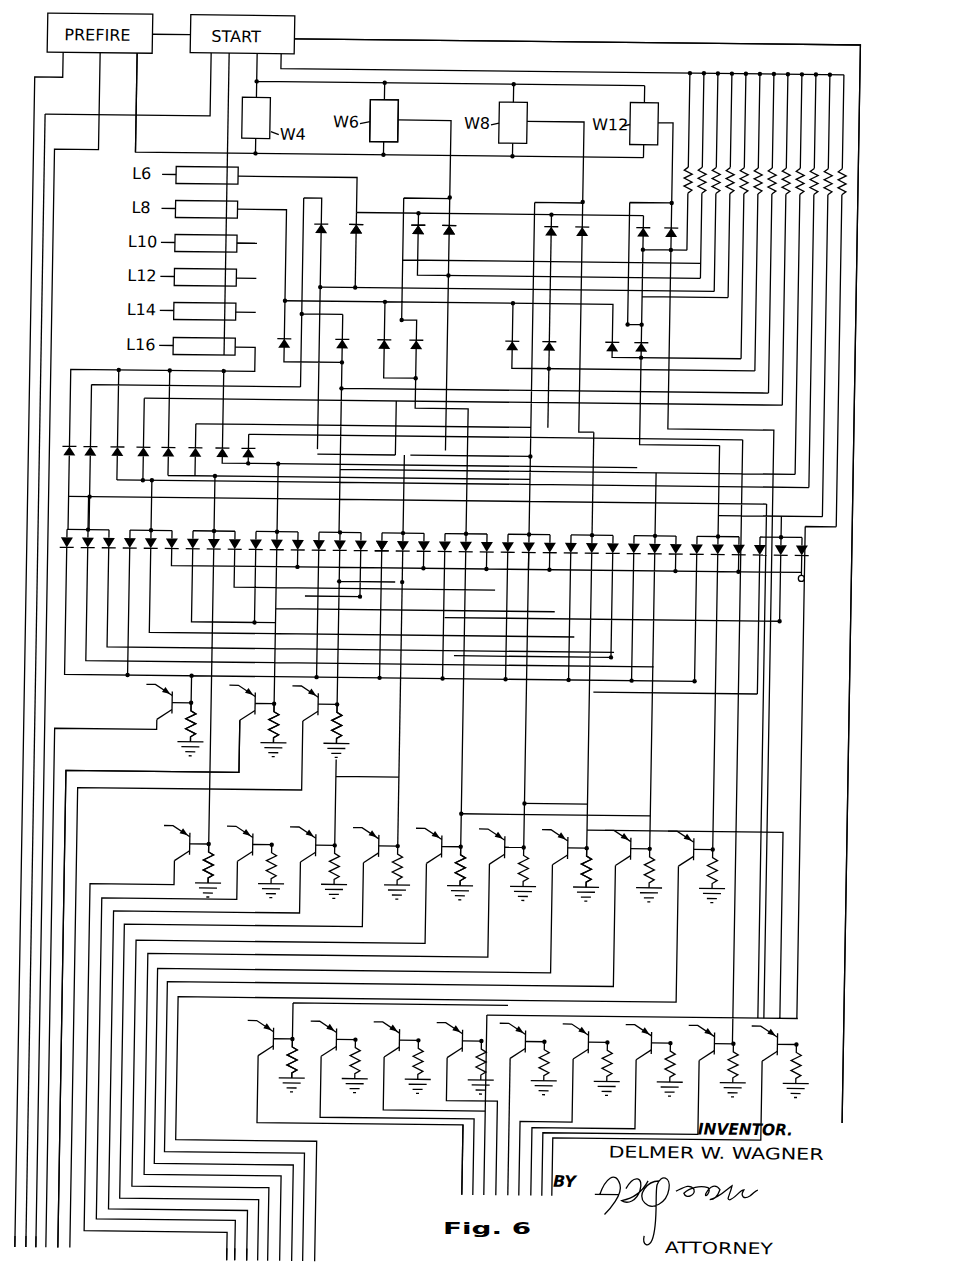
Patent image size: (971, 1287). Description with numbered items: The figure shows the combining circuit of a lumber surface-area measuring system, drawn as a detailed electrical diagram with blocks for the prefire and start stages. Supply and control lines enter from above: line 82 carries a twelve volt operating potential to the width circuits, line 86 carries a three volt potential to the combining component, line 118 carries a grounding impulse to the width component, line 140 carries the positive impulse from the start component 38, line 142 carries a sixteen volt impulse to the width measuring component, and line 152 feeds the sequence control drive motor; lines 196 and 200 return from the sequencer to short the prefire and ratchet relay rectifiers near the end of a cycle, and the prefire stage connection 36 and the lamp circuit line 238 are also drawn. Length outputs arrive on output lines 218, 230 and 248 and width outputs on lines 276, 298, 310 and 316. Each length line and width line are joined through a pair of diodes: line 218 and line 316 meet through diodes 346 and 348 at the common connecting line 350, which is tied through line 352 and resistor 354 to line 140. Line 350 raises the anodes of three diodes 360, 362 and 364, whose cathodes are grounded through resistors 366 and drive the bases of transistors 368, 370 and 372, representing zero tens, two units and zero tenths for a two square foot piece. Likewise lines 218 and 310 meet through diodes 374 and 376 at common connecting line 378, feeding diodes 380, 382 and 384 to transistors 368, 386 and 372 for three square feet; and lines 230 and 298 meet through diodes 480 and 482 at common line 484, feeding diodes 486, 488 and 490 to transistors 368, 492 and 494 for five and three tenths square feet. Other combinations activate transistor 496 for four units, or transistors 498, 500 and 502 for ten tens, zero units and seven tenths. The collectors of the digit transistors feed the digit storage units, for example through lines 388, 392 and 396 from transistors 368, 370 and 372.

The prefire output line 36 is at (148, 56).
The start component 38 is at (203, 56).
The line 82 is at (145, 150).
The line 86 is at (62, 154).
The line 118 is at (300, 83).
The line 140 is at (302, 70).
The line 142 is at (225, 128).
The line 152 is at (553, 41).
The line 196 is at (46, 84).
The line 200 is at (95, 119).
The output line 218 is at (355, 182).
The output line 230 is at (256, 212).
The lamp L16 output line 238 is at (253, 350).
The output line 248 is at (240, 246).
The line 276 is at (670, 184).
The line 298 is at (580, 190).
The line 310 is at (450, 176).
The line 316 is at (324, 140).
The diode 346 is at (345, 232).
The diode 348 is at (322, 227).
The common connecting line 350 is at (318, 451).
The line 352 is at (358, 288).
The resistor 354 is at (733, 176).
The diode 360 is at (383, 546).
The diode 362 is at (413, 568).
The diode 364 is at (427, 545).
The resistor 366 is at (190, 737).
The transistor 368 is at (163, 702).
The transistor 370 is at (320, 850).
The transistor 372 is at (270, 1039).
The diode 374 is at (420, 236).
The diode 376 is at (452, 229).
The common connecting line 378 is at (448, 458).
The diode 380 is at (509, 545).
The diode 382 is at (534, 570).
The diode 384 is at (553, 545).
The transistor 386 is at (380, 848).
The line 388 is at (64, 1237).
The line 392 is at (262, 1253).
The line 396 is at (462, 1148).
The diode 480 is at (510, 346).
The diode 482 is at (551, 339).
The common line 484 is at (598, 423).
The diode 486 is at (576, 545).
The diode 488 is at (597, 545).
The diode 490 is at (617, 545).
The transistor 492 is at (506, 848).
The transistor 494 is at (460, 1042).
The transistor 496 is at (443, 850).
The transistor 498 is at (262, 716).
The transistor 500 is at (187, 849).
The transistor 502 is at (712, 1046).